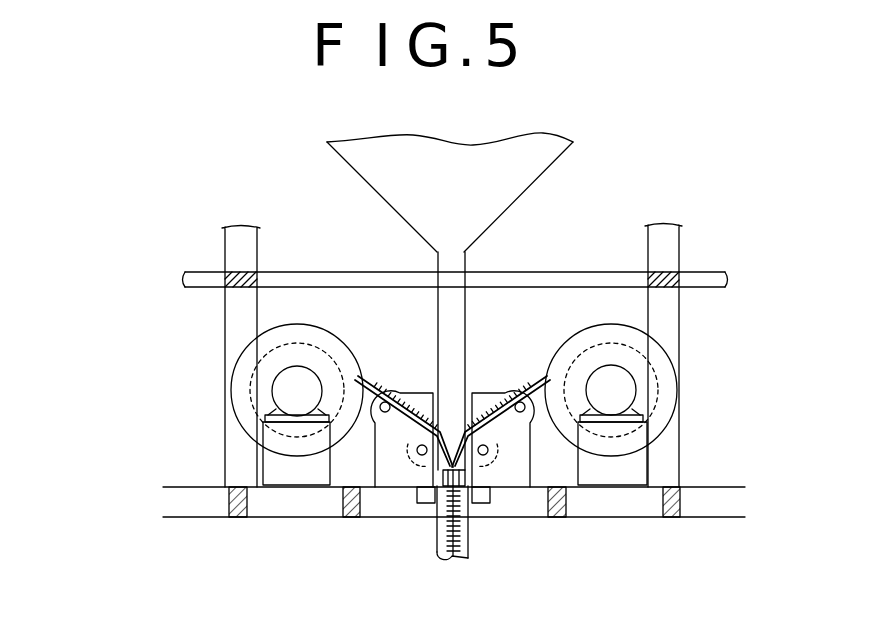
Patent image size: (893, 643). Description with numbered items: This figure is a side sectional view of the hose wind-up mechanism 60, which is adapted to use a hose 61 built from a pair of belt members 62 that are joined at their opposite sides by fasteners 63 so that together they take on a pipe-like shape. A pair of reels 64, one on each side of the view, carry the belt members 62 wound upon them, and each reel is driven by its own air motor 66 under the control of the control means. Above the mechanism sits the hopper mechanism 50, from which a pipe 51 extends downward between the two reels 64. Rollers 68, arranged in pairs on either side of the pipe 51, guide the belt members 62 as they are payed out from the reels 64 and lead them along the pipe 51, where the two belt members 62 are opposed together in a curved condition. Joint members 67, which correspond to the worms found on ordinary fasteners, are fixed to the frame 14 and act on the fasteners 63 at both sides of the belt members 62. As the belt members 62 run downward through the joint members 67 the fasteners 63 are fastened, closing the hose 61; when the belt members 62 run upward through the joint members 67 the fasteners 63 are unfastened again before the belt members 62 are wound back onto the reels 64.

The frame 14 is at (698, 502).
The hopper mechanism 50 is at (360, 190).
The pipe 51 is at (440, 262).
The hose wind-up mechanism 60 is at (212, 408).
The hose 61 is at (440, 545).
The belt members 62 is at (435, 523).
The fasteners 63 is at (470, 542).
The reels 64 is at (240, 415).
The air motors 66 is at (292, 385).
The joint members 67 is at (497, 487).
The rollers 68 is at (384, 393).